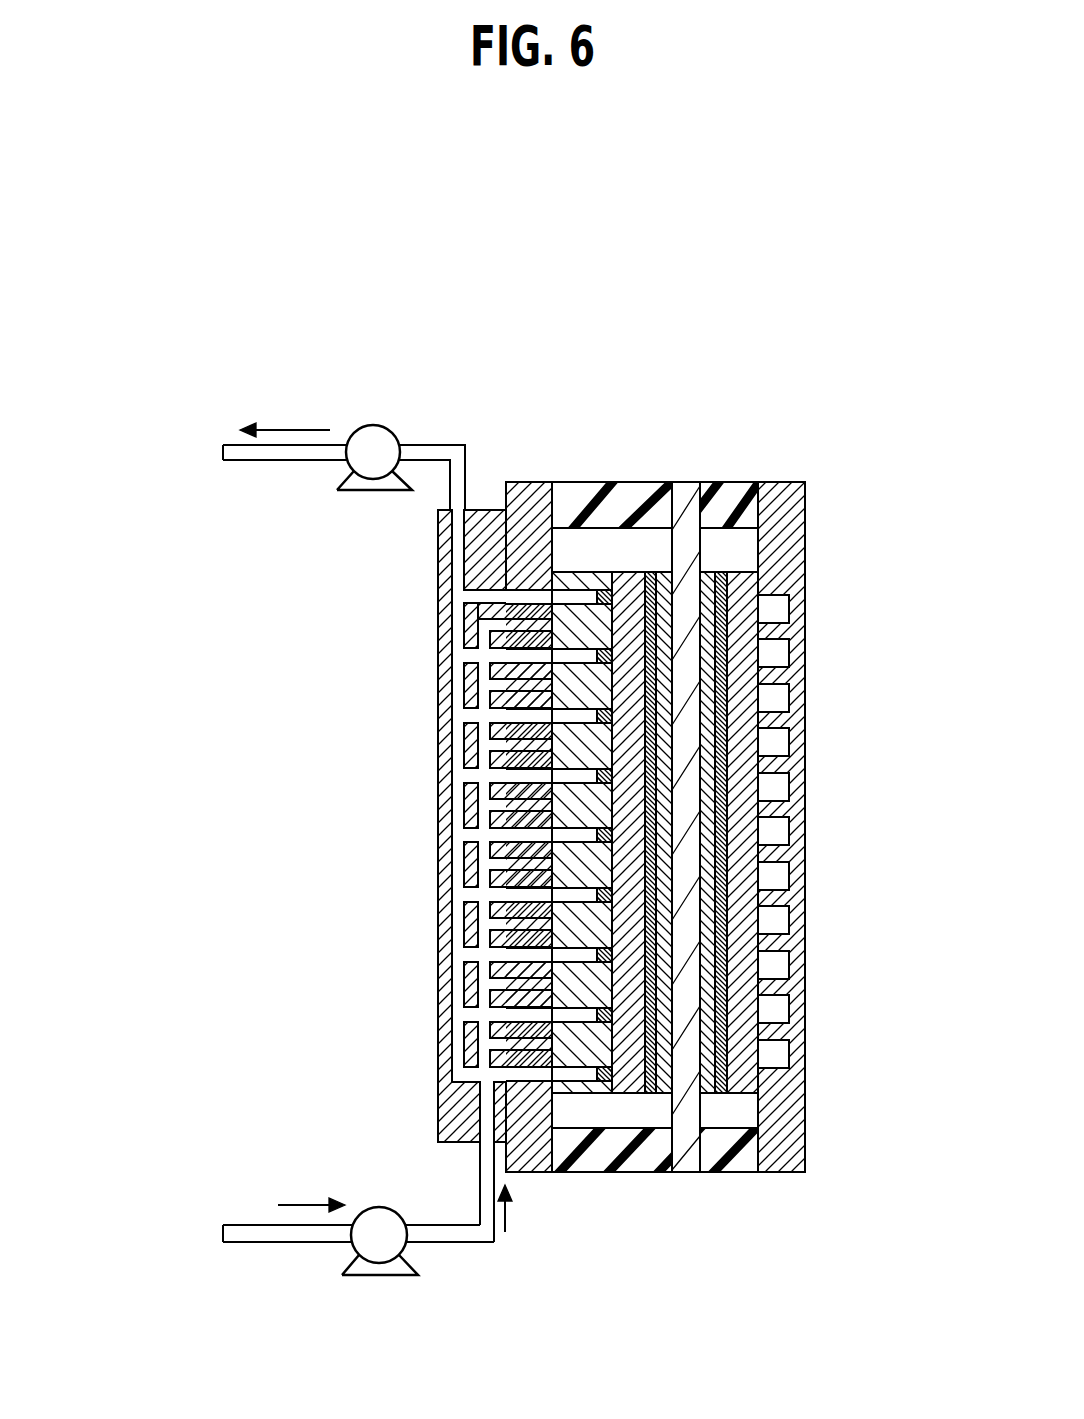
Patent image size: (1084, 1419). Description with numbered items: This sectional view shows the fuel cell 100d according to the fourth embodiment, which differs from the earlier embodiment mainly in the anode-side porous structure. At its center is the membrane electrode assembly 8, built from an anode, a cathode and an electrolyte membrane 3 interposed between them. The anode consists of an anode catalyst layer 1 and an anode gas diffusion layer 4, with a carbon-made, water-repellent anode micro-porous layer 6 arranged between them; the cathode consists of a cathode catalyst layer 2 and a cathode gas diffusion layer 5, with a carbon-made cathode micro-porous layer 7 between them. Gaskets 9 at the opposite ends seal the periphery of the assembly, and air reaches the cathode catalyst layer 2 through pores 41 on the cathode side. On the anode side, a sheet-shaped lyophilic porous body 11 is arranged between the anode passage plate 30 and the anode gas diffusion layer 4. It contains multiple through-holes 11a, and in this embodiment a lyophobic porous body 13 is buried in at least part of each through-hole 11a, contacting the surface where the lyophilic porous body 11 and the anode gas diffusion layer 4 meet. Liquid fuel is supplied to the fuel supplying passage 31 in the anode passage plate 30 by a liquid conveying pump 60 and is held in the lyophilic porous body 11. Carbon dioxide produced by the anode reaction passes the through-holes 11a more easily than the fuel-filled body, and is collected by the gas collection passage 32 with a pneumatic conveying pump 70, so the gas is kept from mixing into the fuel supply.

The fuel cell 100d is at (610, 305).
The pneumatic conveying pump 70 is at (373, 425).
The liquid conveying pump 60 is at (382, 1275).
The anode passage plate 30 is at (527, 482).
The gas collection passage 32 is at (438, 918).
The fuel supplying passage 31 is at (487, 1113).
The lyophilic porous body 11 is at (578, 572).
The through-holes 11a is at (600, 578).
The lyophobic porous body 13 is at (595, 1093).
The anode micro-porous layer 6 is at (648, 560).
The membrane electrode assembly 8 is at (686, 882).
The anode gas diffusion layer 4 is at (630, 1093).
The anode catalyst layer 1 is at (665, 1090).
The electrolyte membrane 3 is at (687, 1170).
The cathode catalyst layer 2 is at (718, 1093).
The cathode gas diffusion layer 5 is at (752, 1093).
The cathode micro-porous layer 7 is at (712, 572).
The gaskets 9 is at (727, 572).
The pores 41 is at (780, 500).